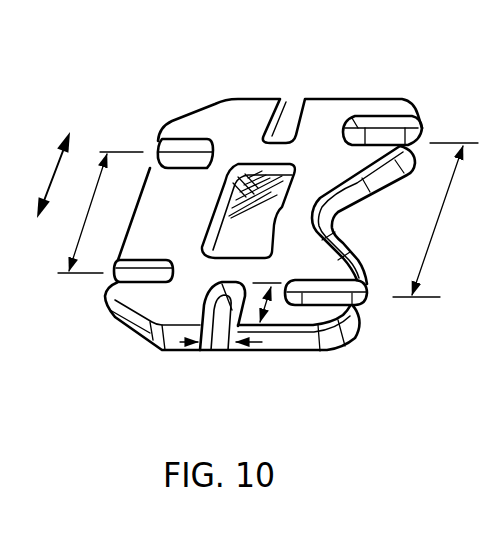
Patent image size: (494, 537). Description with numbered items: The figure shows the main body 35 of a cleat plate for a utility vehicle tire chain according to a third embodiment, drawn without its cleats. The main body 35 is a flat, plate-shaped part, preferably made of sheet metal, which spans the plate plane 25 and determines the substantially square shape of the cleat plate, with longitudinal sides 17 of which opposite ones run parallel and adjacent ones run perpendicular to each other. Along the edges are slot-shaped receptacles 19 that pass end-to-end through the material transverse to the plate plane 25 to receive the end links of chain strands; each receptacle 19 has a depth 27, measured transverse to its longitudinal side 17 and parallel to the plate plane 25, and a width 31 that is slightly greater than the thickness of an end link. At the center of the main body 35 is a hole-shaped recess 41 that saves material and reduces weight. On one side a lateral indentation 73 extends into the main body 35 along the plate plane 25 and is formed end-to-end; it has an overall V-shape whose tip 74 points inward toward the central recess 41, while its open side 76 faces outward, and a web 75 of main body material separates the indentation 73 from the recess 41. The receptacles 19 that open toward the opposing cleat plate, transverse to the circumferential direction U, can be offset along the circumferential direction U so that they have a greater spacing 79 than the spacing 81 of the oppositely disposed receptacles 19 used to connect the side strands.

The longitudinal side 17 is at (380, 98).
The receptacle 19 is at (142, 145).
The plate plane 25 is at (252, 190).
The depth 27 is at (280, 290).
The width 31 is at (221, 354).
The main body 35 is at (217, 120).
The recess 41 is at (265, 250).
The lateral indentation 73 is at (394, 230).
The tip 74 is at (279, 287).
The web 75 is at (303, 206).
The open side 76 is at (385, 216).
The spacing 79 is at (437, 228).
The spacing 81 is at (83, 225).
The circumferential direction U is at (52, 175).